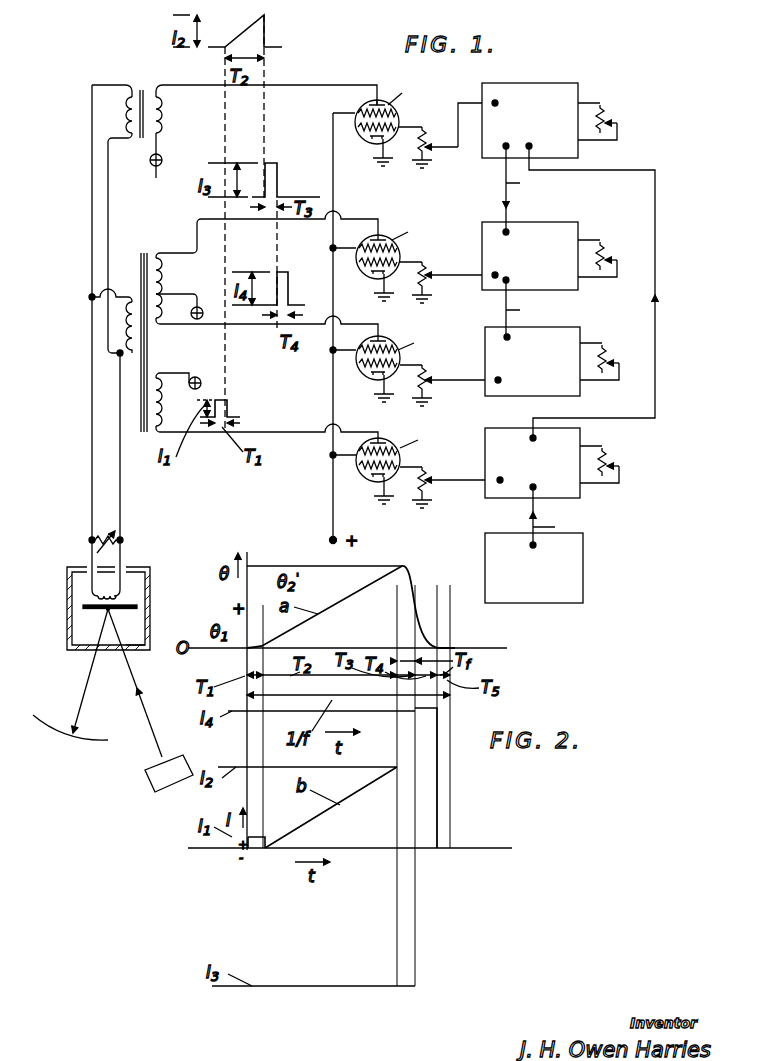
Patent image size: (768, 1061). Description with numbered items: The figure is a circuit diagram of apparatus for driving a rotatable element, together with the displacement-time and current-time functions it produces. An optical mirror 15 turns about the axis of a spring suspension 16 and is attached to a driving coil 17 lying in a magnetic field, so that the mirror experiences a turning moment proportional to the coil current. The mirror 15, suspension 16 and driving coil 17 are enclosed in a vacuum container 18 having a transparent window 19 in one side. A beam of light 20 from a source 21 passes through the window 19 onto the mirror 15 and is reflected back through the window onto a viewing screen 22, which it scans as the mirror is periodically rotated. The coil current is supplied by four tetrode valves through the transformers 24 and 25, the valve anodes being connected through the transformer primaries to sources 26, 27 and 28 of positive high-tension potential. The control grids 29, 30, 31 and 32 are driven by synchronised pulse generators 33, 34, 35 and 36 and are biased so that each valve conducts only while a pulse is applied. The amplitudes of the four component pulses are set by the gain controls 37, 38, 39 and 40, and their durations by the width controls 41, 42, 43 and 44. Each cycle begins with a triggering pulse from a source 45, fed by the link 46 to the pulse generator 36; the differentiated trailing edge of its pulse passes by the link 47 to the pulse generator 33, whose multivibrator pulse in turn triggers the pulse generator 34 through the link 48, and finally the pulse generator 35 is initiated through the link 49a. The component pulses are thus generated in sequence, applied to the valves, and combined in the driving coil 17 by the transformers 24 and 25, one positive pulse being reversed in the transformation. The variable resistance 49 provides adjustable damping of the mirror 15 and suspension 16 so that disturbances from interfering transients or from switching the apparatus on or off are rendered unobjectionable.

The optical mirror 15 is at (137, 607).
The spring suspension 16 is at (110, 610).
The driving coil 17 is at (118, 596).
The vacuum container 18 is at (67, 605).
The transparent window 19 is at (130, 647).
The beam of light 20 is at (144, 711).
The source 21 is at (168, 786).
The viewing screen 22 is at (52, 730).
The transformer 24 is at (141, 86).
The transformer 25 is at (142, 258).
The source of positive H.T. potential 26 is at (159, 178).
The source of positive H.T. potential 27 is at (208, 301).
The source of positive H.T. potential 28 is at (201, 382).
The control grid 29 is at (390, 128).
The control grid 30 is at (392, 262).
The control grid 31 is at (392, 365).
The control grid 32 is at (392, 468).
The pulse generator 33 is at (541, 130).
The pulse generator 34 is at (541, 265).
The pulse generator 35 is at (542, 370).
The pulse generator 36 is at (542, 473).
The gain control 37 is at (447, 135).
The gain control 38 is at (447, 277).
The gain control 39 is at (432, 382).
The gain control 40 is at (432, 483).
The width control 41 is at (604, 112).
The width control 42 is at (604, 249).
The width control 43 is at (606, 352).
The width control 44 is at (608, 458).
The source 45 is at (542, 585).
The link 46 is at (556, 516).
The link 47 is at (655, 401).
The link 48 is at (524, 189).
The variable resistance 49 is at (100, 540).
The link 49a is at (531, 308).